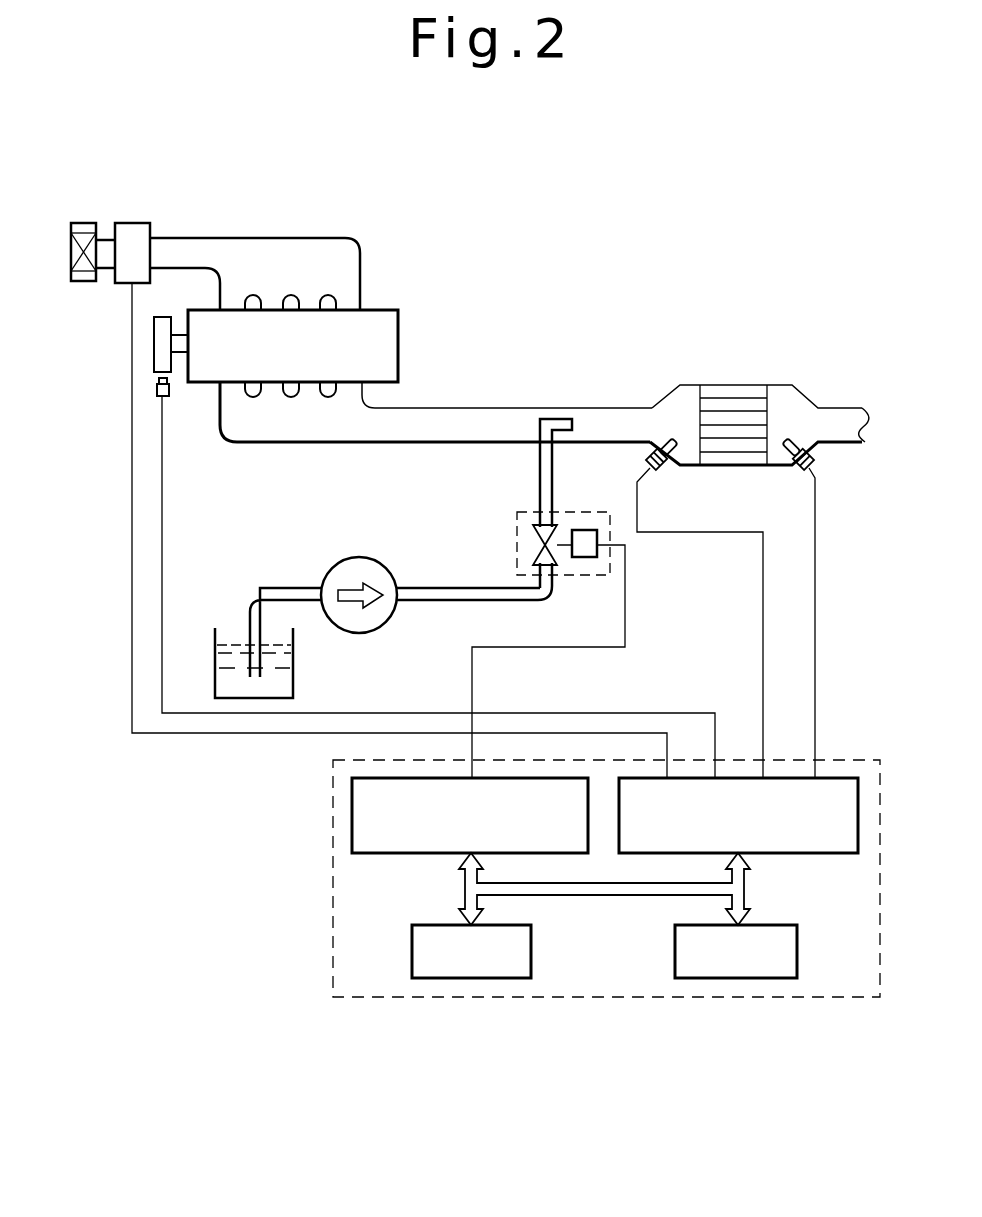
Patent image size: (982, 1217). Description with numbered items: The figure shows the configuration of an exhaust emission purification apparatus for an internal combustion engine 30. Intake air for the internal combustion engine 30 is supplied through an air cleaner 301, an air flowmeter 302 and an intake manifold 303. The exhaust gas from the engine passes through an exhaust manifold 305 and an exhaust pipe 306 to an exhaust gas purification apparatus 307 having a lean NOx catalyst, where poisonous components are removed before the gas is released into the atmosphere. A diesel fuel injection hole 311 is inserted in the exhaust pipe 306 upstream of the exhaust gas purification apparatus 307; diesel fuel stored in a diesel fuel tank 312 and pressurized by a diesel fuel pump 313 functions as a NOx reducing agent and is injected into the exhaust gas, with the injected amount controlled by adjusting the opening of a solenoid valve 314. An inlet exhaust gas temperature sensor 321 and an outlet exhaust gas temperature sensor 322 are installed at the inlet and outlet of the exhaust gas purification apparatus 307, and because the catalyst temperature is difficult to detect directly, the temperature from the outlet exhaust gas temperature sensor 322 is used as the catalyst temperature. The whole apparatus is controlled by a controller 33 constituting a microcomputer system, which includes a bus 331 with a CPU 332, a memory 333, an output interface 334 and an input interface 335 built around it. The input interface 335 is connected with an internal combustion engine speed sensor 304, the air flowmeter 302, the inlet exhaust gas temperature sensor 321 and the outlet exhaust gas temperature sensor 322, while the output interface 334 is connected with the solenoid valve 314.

The air cleaner 301 is at (88, 223).
The air flowmeter 302 is at (138, 223).
The intake manifold 303 is at (357, 242).
The internal combustion engine 30 is at (398, 345).
The internal combustion engine speed sensor 304 is at (167, 398).
The exhaust manifold 305 is at (268, 444).
The exhaust pipe 306 is at (470, 444).
The exhaust gas purification apparatus 307 is at (735, 385).
The diesel fuel injection hole 311 is at (553, 419).
The solenoid valve 314 is at (562, 510).
The diesel fuel pump 313 is at (365, 557).
The diesel fuel tank 312 is at (293, 672).
The inlet exhaust gas temperature sensor 321 is at (668, 470).
The outlet exhaust gas temperature sensor 322 is at (796, 470).
The controller 33 is at (845, 760).
The output interface 334 is at (440, 853).
The input interface 335 is at (777, 853).
The bus 331 is at (638, 897).
The CPU 332 is at (475, 978).
The memory 333 is at (736, 978).